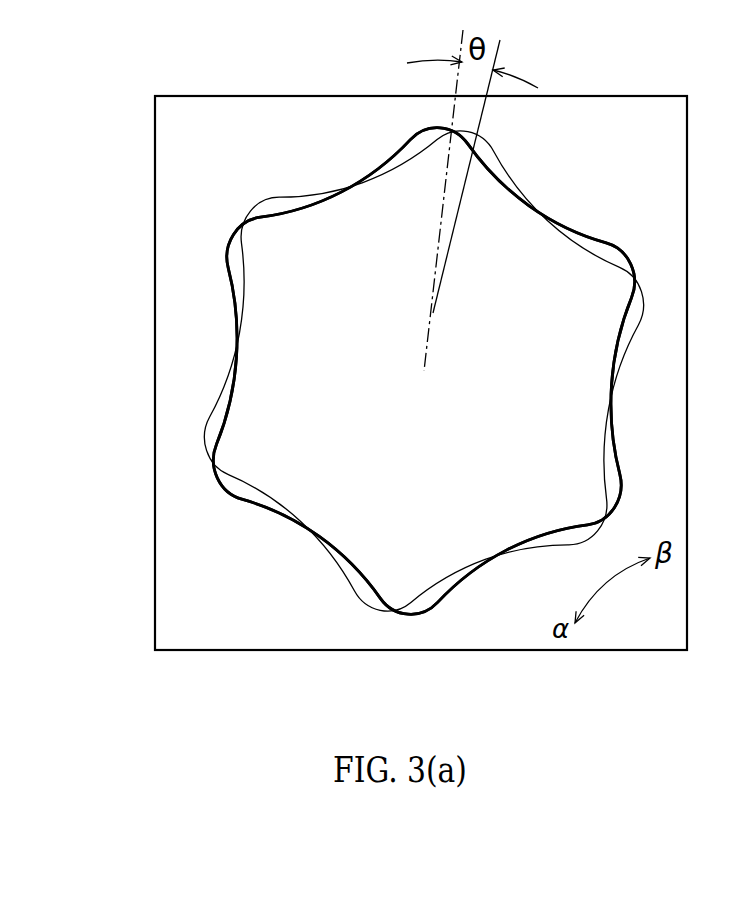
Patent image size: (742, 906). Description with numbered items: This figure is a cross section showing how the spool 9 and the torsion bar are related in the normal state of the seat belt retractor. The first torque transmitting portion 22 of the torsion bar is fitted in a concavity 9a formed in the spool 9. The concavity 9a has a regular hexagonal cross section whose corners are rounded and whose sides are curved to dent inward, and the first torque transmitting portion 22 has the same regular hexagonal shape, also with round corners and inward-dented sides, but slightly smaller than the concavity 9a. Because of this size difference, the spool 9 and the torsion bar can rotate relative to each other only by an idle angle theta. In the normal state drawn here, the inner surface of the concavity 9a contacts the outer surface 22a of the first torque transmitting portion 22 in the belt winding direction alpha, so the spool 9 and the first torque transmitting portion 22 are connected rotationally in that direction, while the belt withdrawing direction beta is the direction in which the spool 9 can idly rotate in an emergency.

The spool 9 is at (421, 373).
The concavity 9a is at (283, 200).
The first torque transmitting portion 22 is at (435, 497).
The outer surface 22a is at (227, 423).